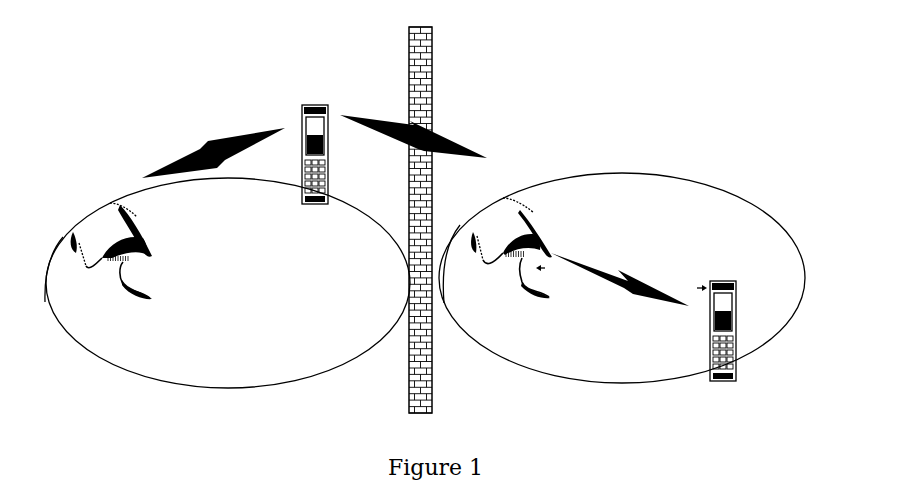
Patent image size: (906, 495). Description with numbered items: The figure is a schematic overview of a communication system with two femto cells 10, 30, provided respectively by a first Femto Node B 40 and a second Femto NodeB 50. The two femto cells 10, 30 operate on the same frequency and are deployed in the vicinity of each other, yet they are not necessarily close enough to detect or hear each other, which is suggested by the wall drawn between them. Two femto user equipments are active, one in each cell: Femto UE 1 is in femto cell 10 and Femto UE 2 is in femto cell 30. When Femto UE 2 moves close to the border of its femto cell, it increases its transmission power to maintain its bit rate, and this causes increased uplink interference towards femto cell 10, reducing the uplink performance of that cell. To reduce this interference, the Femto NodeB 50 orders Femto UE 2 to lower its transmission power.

The Femto UE 1 is at (719, 308).
The Femto UE 2 is at (307, 182).
The femto cell 10 is at (578, 353).
The femto cell 30 is at (220, 350).
The first Femto Node B 40 is at (540, 218).
The second Femto NodeB 50 is at (88, 221).